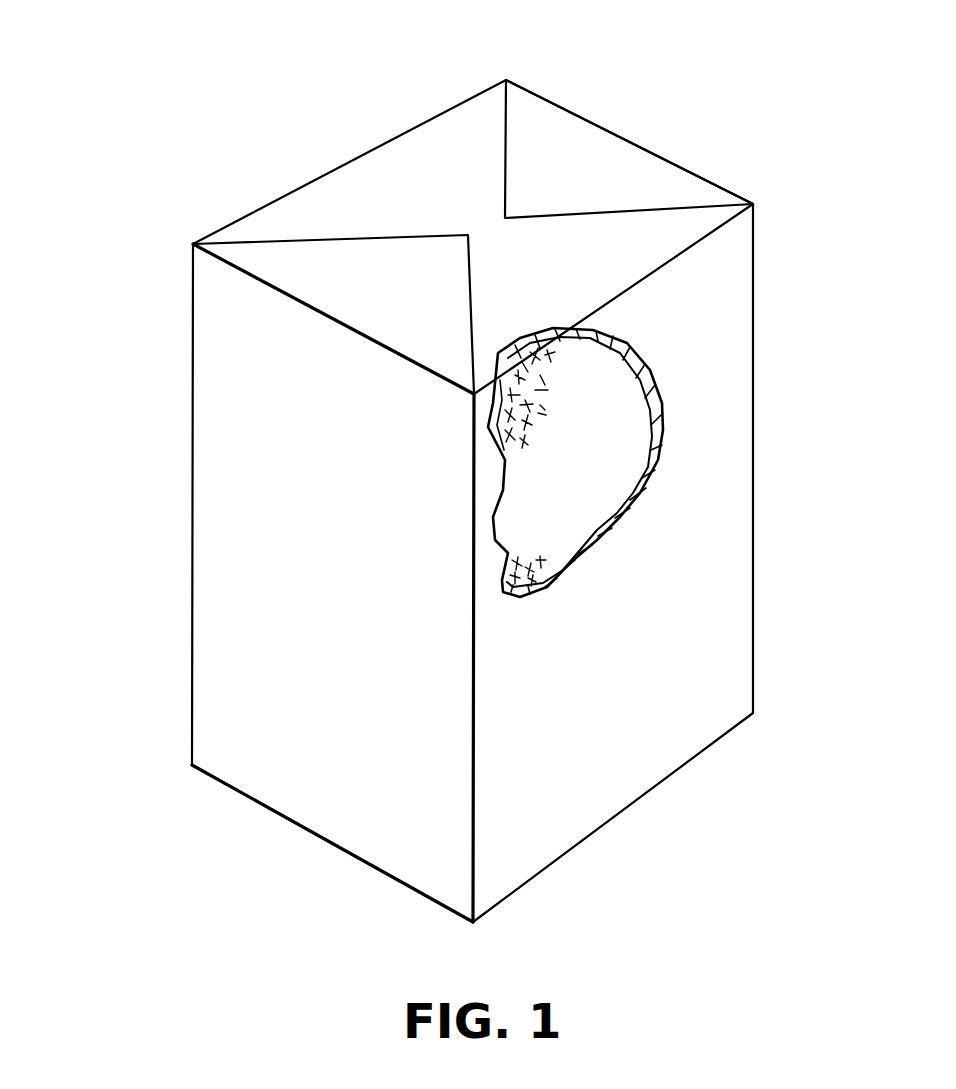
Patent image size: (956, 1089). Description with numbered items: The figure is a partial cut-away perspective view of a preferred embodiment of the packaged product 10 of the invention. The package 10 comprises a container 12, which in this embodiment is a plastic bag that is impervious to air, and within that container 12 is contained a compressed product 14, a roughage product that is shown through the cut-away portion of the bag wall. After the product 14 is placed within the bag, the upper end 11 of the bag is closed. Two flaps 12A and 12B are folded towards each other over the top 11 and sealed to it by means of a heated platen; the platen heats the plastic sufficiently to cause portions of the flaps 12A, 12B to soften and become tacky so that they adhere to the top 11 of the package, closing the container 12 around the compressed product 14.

The packaged product 10 is at (472, 501).
The upper end of the bag 11 is at (438, 138).
The flap 12A is at (592, 165).
The flap 12B is at (300, 270).
The container 12 is at (660, 455).
The compressed product 14 is at (540, 392).